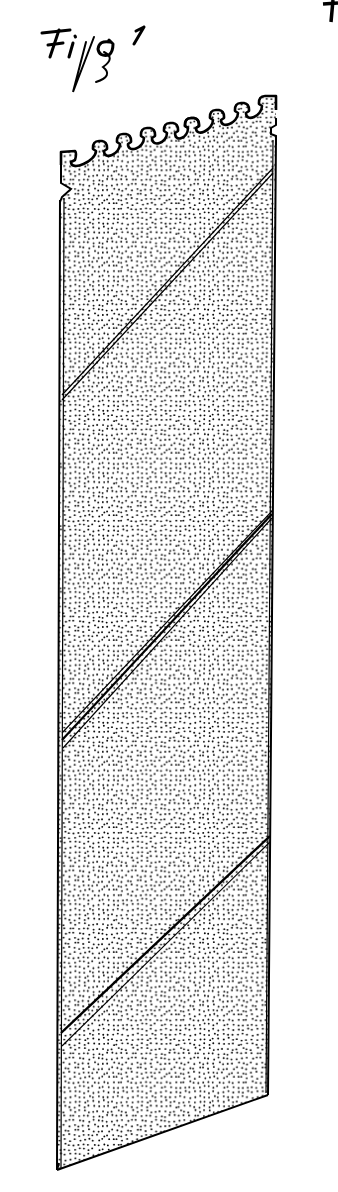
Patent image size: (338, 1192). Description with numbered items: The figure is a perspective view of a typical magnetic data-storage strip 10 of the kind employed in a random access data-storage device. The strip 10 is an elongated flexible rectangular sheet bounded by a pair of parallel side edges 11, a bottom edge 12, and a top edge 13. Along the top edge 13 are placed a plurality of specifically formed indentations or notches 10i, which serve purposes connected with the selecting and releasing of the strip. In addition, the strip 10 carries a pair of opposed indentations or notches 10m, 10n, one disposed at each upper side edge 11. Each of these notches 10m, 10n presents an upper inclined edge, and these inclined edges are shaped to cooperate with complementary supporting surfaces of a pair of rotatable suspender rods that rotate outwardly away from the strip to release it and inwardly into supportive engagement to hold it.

The data-storage strip 10 is at (59, 790).
The indentations or notches 10i is at (197, 117).
The indentation or notch 10m is at (62, 191).
The indentation or notch 10n is at (277, 129).
The side edges 11 is at (60, 508).
The bottom edge 12 is at (139, 1142).
The top edge 13 is at (262, 96).